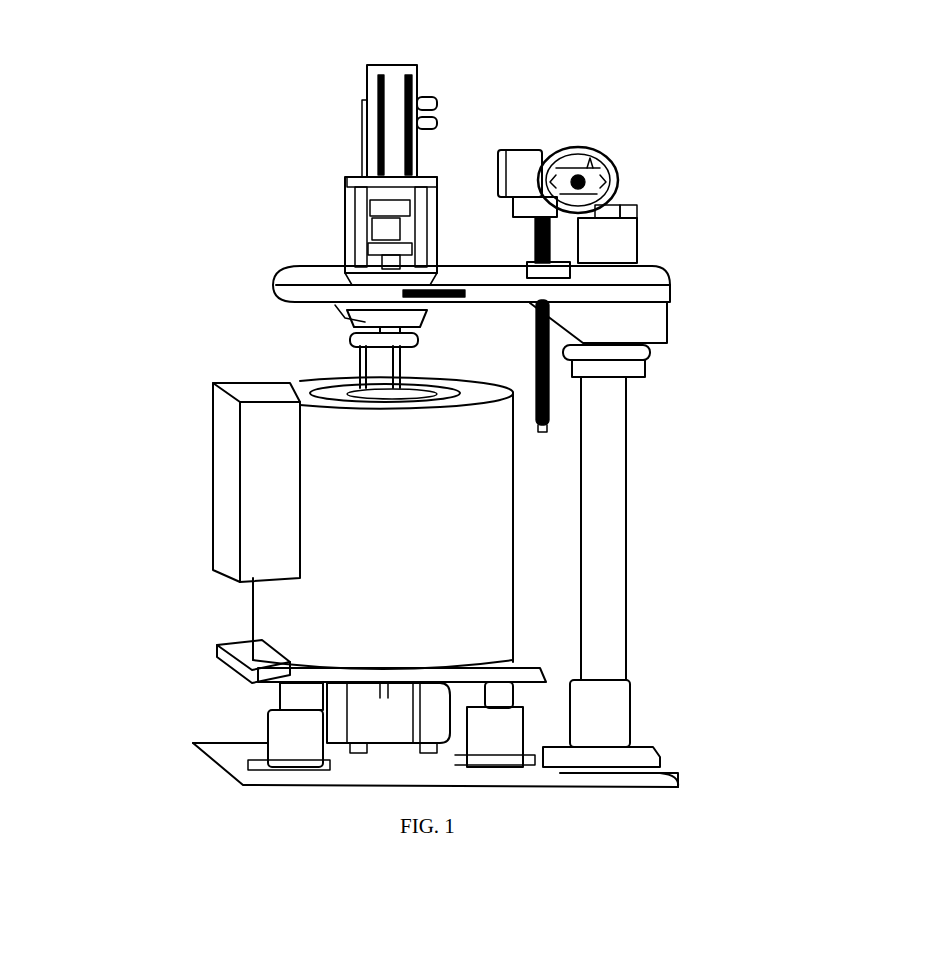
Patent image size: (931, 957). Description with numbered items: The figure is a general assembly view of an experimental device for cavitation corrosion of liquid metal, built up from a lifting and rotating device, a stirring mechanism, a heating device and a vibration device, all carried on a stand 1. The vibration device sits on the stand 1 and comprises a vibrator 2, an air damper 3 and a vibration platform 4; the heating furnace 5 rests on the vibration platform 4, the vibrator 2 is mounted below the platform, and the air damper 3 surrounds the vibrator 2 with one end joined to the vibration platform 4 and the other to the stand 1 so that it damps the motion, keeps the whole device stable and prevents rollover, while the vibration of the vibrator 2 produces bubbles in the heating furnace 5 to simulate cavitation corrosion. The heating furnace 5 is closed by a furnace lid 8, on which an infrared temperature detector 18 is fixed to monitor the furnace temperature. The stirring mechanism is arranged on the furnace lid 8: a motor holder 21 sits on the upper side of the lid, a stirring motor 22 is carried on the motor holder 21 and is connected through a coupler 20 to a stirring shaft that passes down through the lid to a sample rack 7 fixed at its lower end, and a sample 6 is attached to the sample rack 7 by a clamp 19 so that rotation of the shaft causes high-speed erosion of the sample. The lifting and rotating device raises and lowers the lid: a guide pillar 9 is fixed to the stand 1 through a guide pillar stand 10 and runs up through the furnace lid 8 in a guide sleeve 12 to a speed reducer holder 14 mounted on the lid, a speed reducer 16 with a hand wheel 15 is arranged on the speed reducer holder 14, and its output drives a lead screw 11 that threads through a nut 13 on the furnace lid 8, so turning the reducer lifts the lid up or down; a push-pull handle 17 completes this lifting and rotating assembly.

The stand 1 is at (480, 737).
The vibrator 2 is at (303, 618).
The air damper 3 is at (298, 683).
The vibration platform 4 is at (179, 609).
The heating furnace 5 is at (288, 523).
The sample 6 is at (232, 367).
The sample rack 7 is at (241, 260).
The furnace lid 8 is at (245, 282).
The guide pillar 9 is at (694, 528).
The guide pillar stand 10 is at (671, 681).
The lead screw 11 is at (677, 324).
The guide sleeve 12 is at (675, 325).
The nut 13 is at (673, 250).
The speed reducer holder 14 is at (696, 202).
The hand wheel 15 is at (645, 148).
The speed reducer 16 is at (586, 129).
The push-pull handle 17 is at (304, 165).
The infrared temperature detector 18 is at (397, 203).
The clamp 19 is at (212, 308).
The coupler 20 is at (280, 212).
The motor holder 21 is at (315, 189).
The stirring motor 22 is at (438, 88).